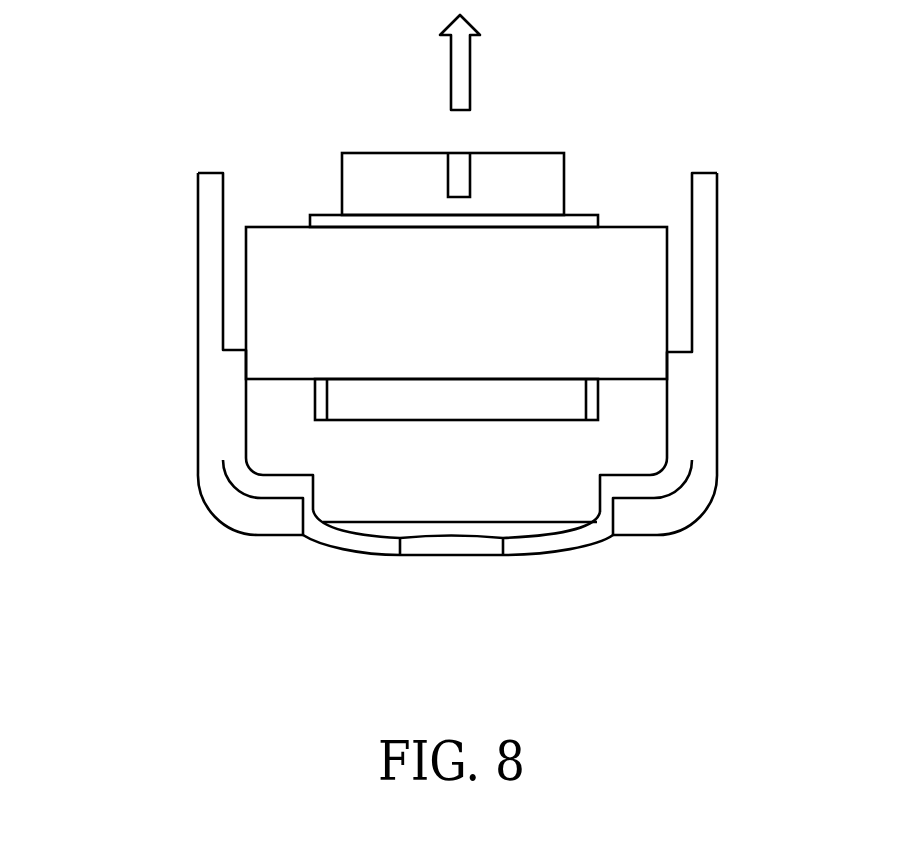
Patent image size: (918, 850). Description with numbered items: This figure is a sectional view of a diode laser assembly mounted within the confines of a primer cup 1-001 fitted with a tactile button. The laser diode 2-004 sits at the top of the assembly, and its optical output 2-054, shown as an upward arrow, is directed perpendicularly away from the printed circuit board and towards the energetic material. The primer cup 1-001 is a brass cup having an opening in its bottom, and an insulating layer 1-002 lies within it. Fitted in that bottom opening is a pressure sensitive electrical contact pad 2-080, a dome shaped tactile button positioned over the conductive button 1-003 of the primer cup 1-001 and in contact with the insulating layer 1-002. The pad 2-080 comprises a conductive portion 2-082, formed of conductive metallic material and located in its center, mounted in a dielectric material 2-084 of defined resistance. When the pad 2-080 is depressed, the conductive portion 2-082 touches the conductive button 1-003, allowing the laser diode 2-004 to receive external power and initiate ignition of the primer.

The optical output 2-054 is at (470, 88).
The laser diode 2-004 is at (537, 153).
The primer cup 1-001 is at (198, 430).
The insulating layer 1-002 is at (683, 401).
The conductive button 1-003 is at (508, 495).
The dielectric material 2-084 is at (348, 552).
The conductive portion 2-082 is at (432, 557).
The pressure sensitive electrical contact pad 2-080 is at (585, 562).